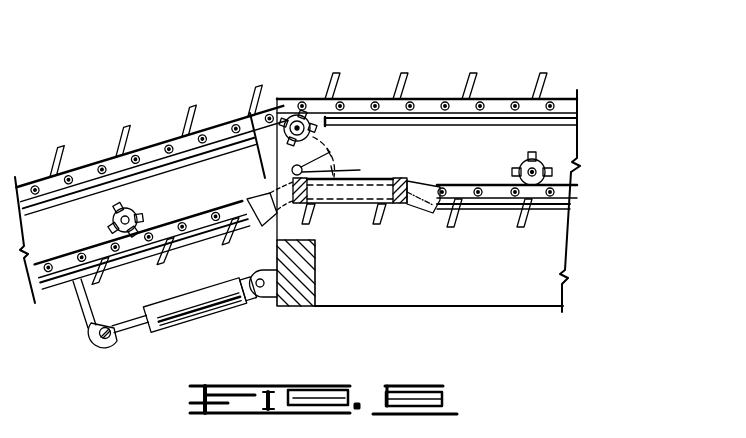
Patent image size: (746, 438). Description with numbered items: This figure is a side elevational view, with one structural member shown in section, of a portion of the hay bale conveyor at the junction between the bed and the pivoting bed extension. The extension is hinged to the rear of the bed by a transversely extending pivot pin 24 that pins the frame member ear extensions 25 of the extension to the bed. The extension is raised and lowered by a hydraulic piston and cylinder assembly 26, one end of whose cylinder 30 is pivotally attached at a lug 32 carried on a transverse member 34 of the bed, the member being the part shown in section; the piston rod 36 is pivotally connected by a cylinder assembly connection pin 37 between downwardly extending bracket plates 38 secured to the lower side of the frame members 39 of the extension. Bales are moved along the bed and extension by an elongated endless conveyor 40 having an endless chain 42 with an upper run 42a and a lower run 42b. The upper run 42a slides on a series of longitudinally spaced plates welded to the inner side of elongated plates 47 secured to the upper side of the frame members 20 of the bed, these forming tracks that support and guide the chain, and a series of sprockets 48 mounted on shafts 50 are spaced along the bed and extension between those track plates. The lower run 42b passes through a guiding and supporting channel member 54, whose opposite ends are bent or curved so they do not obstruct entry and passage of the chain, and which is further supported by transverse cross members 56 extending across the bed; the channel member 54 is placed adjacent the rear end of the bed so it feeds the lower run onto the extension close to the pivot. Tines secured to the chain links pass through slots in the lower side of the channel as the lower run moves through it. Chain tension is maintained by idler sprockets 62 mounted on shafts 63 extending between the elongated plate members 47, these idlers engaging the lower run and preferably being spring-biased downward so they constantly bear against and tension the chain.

The frame member 20 is at (454, 293).
The pivot pin 24 is at (327, 157).
The ear extension 25 is at (157, 167).
The hydraulic piston and cylinder assembly 26 is at (182, 327).
The cylinder 30 is at (187, 297).
The lug 32 is at (260, 289).
The transverse member 34 is at (298, 292).
The piston rod 36 is at (132, 336).
The cylinder assembly connection pin 37 is at (93, 335).
The bracket plate 38 is at (85, 303).
The frame member 39 is at (244, 178).
The endless conveyor 40 is at (427, 142).
The endless chain 42 is at (420, 119).
The upper run 42a is at (152, 152).
The lower run 42b is at (193, 218).
The elongated plate 47 is at (372, 149).
The sprocket 48 is at (292, 116).
The shaft 50 is at (281, 99).
The channel member 54 is at (336, 190).
The transverse cross member 56 is at (396, 180).
The idler sprocket 62 is at (309, 188).
The shaft 63 is at (110, 218).